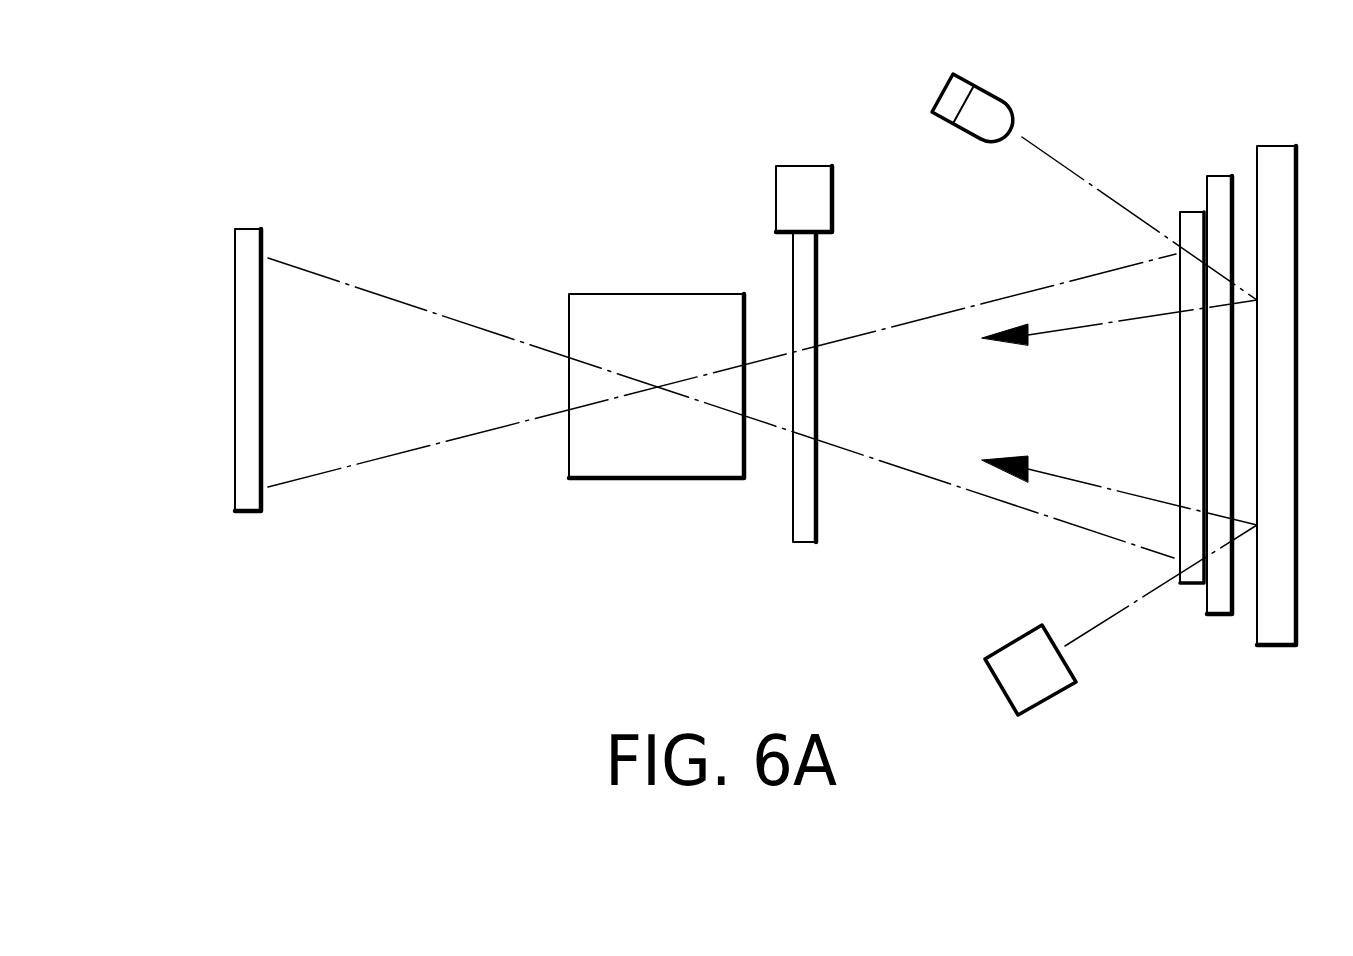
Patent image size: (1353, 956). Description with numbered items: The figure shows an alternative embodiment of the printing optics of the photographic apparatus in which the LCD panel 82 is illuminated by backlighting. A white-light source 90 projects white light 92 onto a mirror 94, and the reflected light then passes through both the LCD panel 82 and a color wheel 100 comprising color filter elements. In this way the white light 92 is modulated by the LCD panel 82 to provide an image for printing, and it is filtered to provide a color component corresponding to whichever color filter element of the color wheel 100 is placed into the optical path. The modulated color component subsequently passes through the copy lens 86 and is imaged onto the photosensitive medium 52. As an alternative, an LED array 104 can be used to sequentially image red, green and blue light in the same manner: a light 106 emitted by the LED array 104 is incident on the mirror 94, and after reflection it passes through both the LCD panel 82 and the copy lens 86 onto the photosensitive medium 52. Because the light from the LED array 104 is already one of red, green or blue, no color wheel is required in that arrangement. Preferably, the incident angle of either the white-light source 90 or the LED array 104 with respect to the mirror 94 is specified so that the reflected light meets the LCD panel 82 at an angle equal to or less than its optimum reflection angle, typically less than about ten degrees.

The photosensitive medium 52 is at (245, 448).
The copy lens 86 is at (647, 468).
The color wheel 100 is at (797, 277).
The white-light source 90 is at (987, 107).
The white light 92 is at (1117, 210).
The mirror 94 is at (1277, 160).
The LCD panel 82 is at (1220, 607).
The LED array 104 is at (1045, 683).
The light 106 is at (1100, 620).